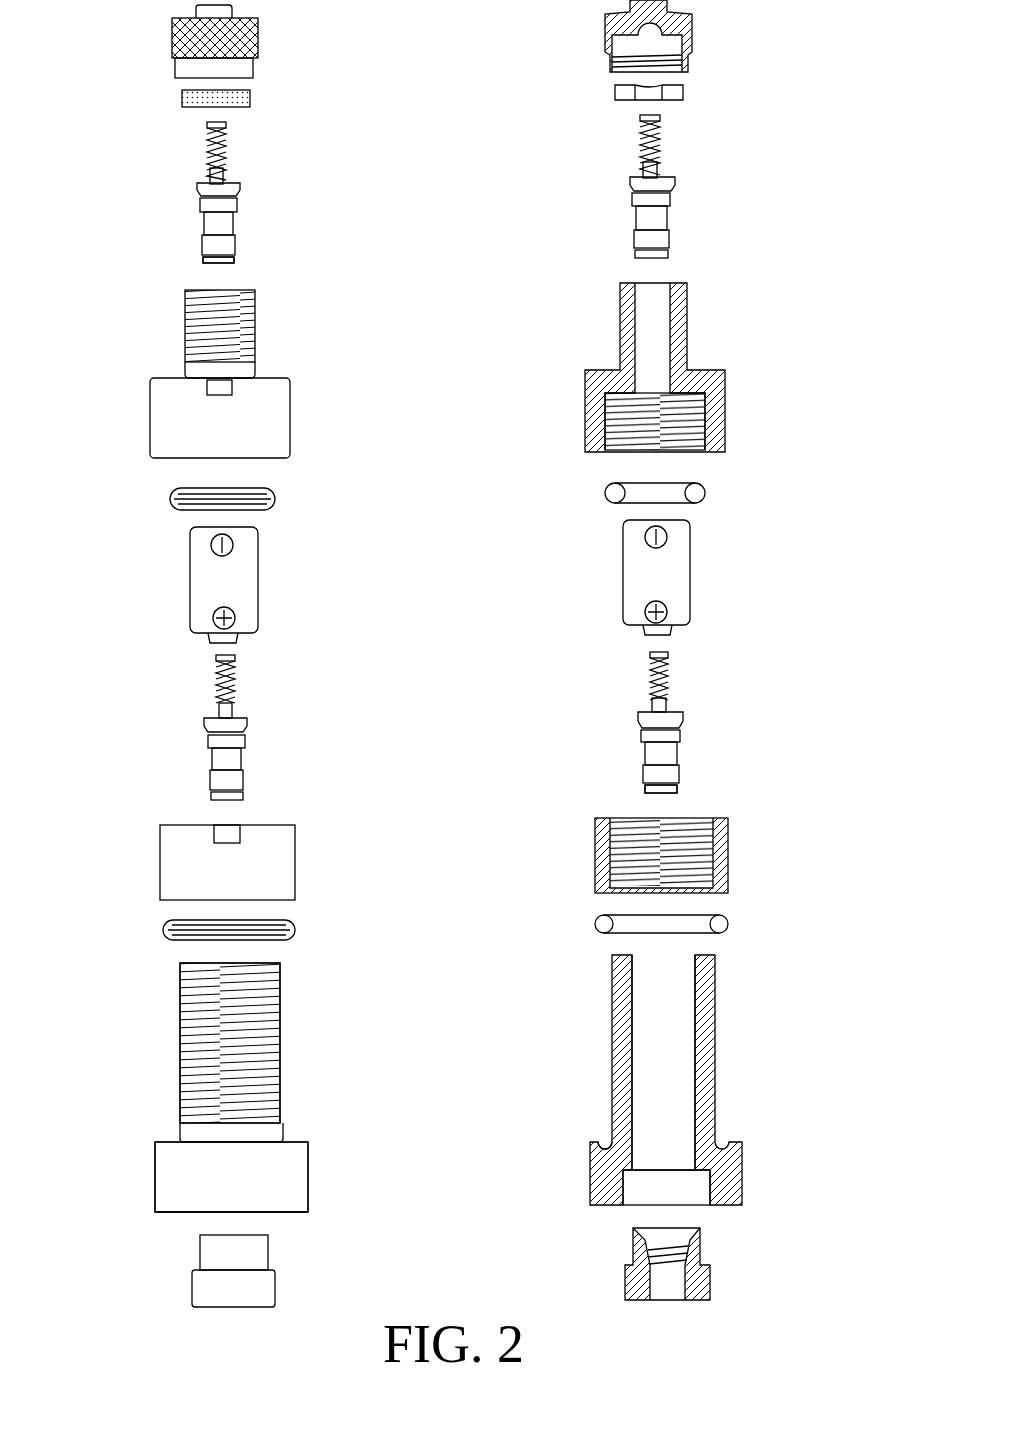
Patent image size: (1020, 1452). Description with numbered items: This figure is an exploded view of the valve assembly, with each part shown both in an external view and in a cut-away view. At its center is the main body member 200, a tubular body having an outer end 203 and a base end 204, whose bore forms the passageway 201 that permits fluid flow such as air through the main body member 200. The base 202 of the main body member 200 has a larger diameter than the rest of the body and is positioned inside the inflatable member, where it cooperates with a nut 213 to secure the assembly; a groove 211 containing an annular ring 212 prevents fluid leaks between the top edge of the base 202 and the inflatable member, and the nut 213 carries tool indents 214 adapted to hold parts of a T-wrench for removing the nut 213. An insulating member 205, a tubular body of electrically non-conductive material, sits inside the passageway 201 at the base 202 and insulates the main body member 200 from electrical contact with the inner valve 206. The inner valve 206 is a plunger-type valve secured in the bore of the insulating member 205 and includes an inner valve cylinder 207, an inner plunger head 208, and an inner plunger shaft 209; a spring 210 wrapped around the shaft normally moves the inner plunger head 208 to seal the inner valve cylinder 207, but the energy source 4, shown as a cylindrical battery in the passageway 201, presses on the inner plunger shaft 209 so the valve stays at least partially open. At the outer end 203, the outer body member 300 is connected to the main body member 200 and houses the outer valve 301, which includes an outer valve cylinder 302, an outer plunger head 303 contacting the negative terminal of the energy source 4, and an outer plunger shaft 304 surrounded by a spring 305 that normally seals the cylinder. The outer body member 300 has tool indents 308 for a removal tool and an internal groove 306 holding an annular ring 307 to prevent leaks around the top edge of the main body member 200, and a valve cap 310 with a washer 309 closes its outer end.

The valve cap 310 is at (603, 30).
The washer 309 is at (612, 92).
The spring 305 is at (212, 118).
The outer plunger shaft 304 is at (650, 108).
The outer valve 301 is at (620, 206).
The outer valve cylinder 302 is at (655, 216).
The outer plunger head 303 is at (216, 262).
The tool indents 308 is at (208, 397).
The outer body member 300 is at (608, 337).
The groove 306 is at (655, 405).
The annular ring 307 is at (603, 490).
The energy source 4 is at (618, 588).
The inner plunger shaft 209 is at (220, 652).
The spring 210 is at (220, 682).
The inner valve 206 is at (628, 755).
The inner valve cylinder 207 is at (665, 748).
The tool indents 214 is at (218, 851).
The inner plunger head 208 is at (664, 795).
The nut 213 is at (592, 848).
The annular ring 212 is at (588, 925).
The outer end 203 is at (205, 963).
The passageway 201 is at (675, 1045).
The groove 211 is at (606, 1140).
The base 202 is at (182, 1167).
The main body member 200 is at (593, 1156).
The base end 204 is at (180, 1213).
The insulating member 205 is at (623, 1283).